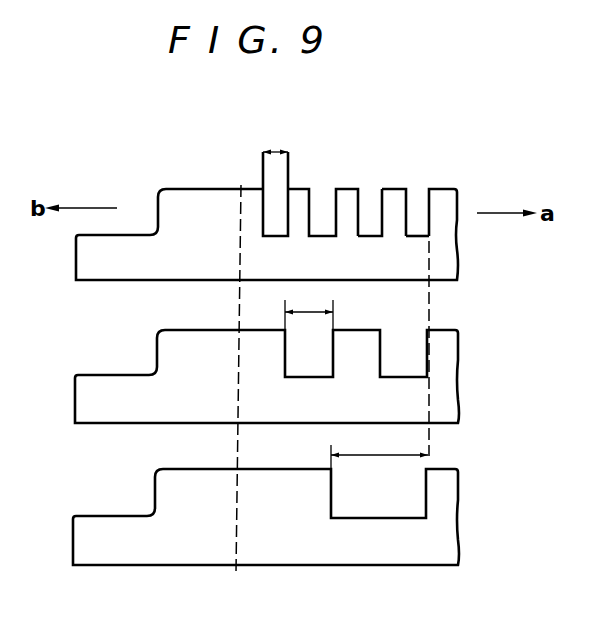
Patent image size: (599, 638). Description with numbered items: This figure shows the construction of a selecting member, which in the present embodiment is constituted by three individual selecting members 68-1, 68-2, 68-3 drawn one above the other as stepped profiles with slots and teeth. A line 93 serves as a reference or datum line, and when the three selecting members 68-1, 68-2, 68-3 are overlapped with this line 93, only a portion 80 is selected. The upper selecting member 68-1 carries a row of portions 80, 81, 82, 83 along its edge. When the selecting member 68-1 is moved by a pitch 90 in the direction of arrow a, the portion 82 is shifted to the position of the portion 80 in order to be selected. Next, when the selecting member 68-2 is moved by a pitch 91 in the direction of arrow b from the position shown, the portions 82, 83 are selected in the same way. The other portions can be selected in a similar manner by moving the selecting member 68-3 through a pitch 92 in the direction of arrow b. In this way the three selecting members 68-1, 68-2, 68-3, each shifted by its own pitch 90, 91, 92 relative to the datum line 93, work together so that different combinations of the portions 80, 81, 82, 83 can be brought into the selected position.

The selecting member 68-1 is at (112, 270).
The selecting member 68-2 is at (107, 408).
The selecting member 68-3 is at (107, 550).
The portion 80 is at (419, 195).
The portion 81 is at (396, 197).
The portion 82 is at (372, 192).
The portion 83 is at (345, 197).
The pitch 90 is at (279, 151).
The pitch 91 is at (325, 310).
The pitch 92 is at (395, 455).
The line 93 is at (430, 451).